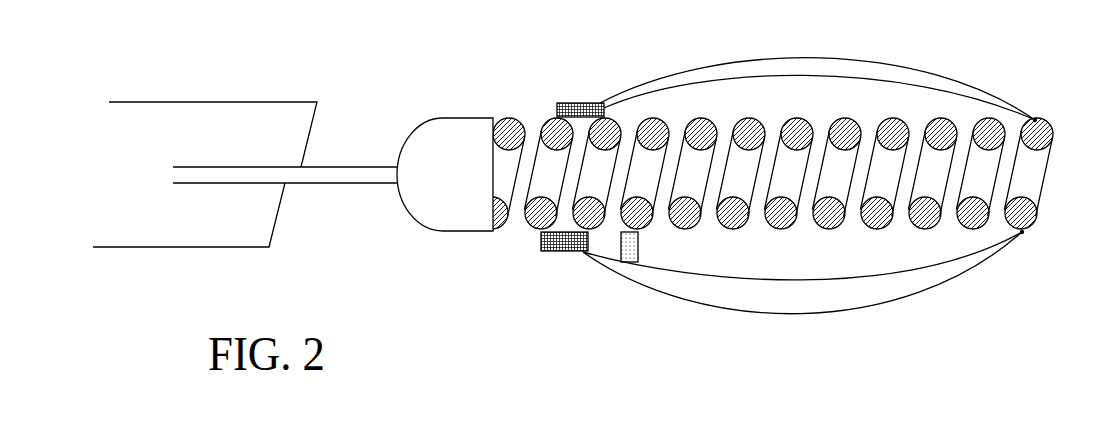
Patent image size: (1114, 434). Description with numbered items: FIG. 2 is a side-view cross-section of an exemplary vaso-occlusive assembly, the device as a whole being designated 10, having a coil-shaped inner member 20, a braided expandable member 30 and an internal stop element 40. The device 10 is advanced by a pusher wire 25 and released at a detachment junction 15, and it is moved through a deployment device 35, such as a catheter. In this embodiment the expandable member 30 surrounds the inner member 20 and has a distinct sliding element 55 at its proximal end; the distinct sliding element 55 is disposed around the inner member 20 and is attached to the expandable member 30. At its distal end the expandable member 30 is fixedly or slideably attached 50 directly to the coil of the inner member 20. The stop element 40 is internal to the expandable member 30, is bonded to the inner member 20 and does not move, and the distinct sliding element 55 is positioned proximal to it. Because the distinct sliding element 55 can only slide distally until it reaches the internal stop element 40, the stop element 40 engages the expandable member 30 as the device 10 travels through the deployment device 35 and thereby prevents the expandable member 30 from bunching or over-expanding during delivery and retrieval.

The vaso-occlusive device 10 is at (278, 67).
The detachment junction 15 is at (395, 183).
The inner member 20 is at (508, 117).
The pusher wire 25 is at (333, 167).
The expandable member 30 is at (733, 73).
The deployment device 35 is at (192, 229).
The stop element 40 is at (638, 246).
The distal attachment 50 is at (1035, 118).
The distinct sliding element 55 is at (573, 102).